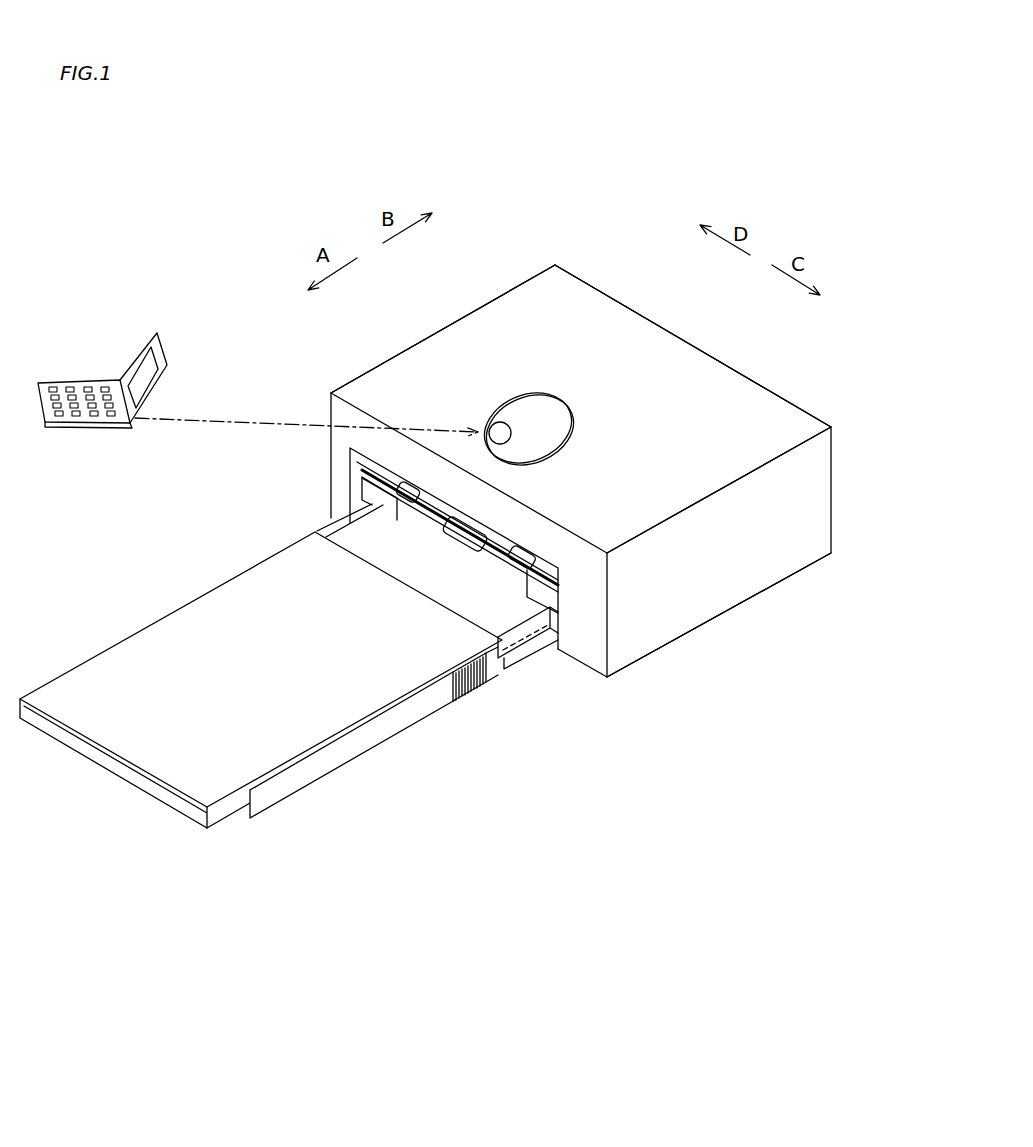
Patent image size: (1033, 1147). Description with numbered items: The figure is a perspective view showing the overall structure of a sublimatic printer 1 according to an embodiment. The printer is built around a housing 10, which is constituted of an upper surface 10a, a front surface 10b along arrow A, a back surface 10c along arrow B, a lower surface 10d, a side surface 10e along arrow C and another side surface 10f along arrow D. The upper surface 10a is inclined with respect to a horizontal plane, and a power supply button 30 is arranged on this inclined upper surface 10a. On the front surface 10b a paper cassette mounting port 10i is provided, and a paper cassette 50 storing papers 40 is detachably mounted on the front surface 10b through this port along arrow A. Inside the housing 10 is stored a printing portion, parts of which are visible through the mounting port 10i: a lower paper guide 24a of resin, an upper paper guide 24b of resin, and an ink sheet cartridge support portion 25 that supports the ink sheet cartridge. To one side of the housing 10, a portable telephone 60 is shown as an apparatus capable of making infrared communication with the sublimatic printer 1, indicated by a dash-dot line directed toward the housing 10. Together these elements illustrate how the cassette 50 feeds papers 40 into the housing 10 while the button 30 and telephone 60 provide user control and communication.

The sublimatic printer 1 is at (709, 190).
The housing 10 is at (565, 300).
The upper surface 10a is at (774, 416).
The front surface 10b is at (578, 642).
The back surface 10c is at (682, 334).
The lower surface 10d is at (657, 652).
The side surface 10e is at (757, 557).
The side surface 10f is at (467, 312).
The paper cassette mounting port 10i is at (553, 598).
The lower paper guide 24a is at (470, 545).
The upper paper guide 24b is at (528, 560).
The ink sheet cartridge support portion 25 is at (372, 500).
The power supply button 30 is at (575, 368).
The papers 40 is at (372, 542).
The paper cassette 50 is at (302, 675).
The portable telephone 60 is at (78, 388).